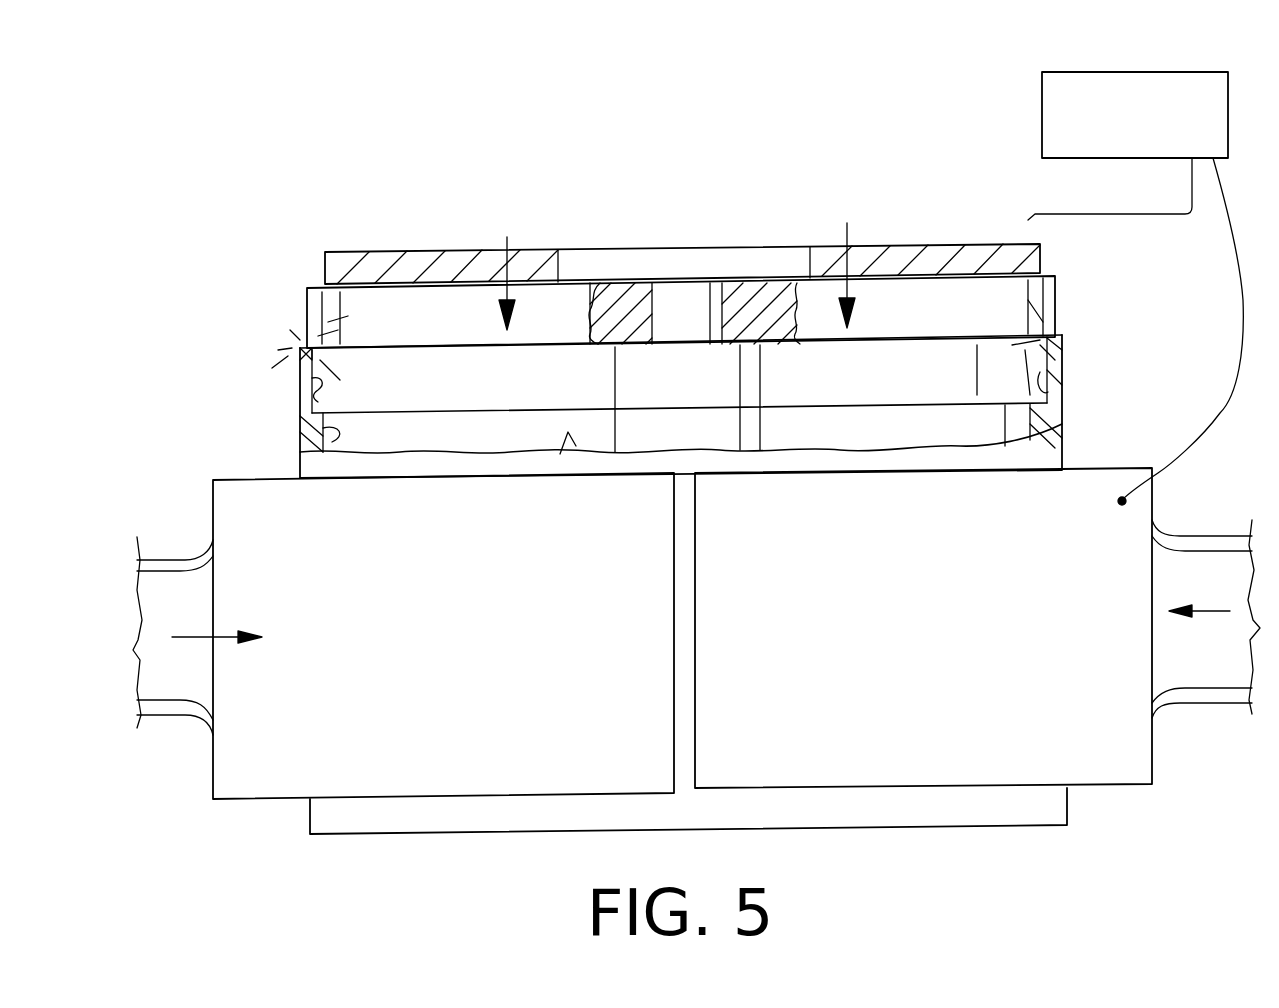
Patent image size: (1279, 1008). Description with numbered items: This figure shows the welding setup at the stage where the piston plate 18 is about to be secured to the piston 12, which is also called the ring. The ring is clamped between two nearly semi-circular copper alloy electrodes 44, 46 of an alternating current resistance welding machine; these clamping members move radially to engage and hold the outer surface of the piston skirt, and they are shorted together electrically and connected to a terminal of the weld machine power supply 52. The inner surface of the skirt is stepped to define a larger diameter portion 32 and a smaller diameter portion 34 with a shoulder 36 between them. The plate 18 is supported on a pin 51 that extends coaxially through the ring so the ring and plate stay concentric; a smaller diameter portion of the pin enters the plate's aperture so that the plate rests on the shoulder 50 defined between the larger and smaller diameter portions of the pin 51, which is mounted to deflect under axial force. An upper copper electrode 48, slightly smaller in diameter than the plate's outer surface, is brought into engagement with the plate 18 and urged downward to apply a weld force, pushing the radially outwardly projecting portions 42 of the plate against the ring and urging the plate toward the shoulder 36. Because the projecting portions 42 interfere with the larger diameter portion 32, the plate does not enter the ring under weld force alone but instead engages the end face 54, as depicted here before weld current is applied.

The piston 12 is at (530, 815).
The piston plate 18 is at (806, 308).
The larger diameter portion 32 is at (297, 383).
The smaller diameter portion 34 is at (330, 432).
The shoulder 36 is at (1040, 380).
The radially outwardly projecting portions 42 is at (307, 307).
The copper alloy electrode 44 is at (275, 772).
The copper alloy electrode 46 is at (1120, 752).
The upper copper electrode 48 is at (1003, 247).
The shoulder 50 is at (630, 335).
The pin 51 is at (712, 402).
The weld machine power supply 52 is at (1042, 100).
The end face 54 is at (303, 348).